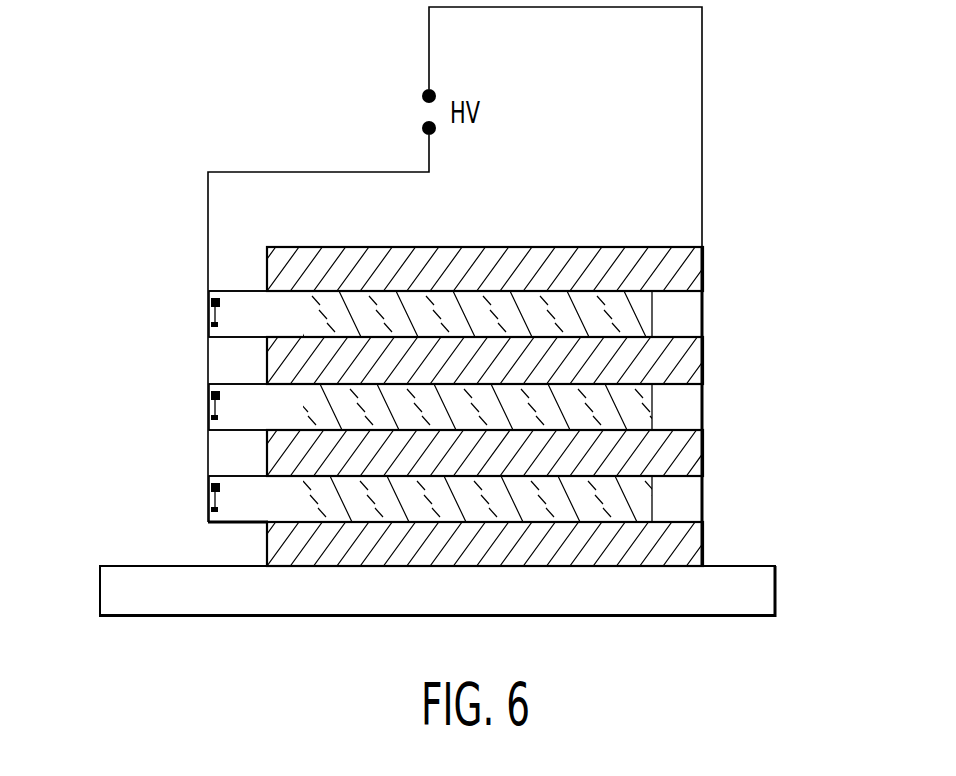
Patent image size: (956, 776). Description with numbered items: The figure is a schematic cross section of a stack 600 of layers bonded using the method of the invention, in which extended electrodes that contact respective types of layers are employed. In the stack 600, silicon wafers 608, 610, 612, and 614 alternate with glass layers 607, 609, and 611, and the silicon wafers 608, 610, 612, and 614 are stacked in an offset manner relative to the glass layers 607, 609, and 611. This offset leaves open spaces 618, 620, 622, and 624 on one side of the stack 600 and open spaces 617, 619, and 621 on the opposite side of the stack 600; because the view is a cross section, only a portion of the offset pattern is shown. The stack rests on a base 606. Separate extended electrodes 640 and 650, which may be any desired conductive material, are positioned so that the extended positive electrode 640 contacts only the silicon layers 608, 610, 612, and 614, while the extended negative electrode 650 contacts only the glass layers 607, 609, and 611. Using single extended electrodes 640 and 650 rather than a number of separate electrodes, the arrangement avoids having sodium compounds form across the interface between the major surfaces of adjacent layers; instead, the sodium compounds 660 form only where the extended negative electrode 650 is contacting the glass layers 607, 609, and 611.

The stack 600 is at (555, 167).
The base substrate 606 is at (775, 590).
The glass layer 607 is at (704, 293).
The silicon wafer 608 is at (266, 272).
The glass layer 609 is at (704, 384).
The silicon wafer 610 is at (252, 366).
The glass layer 611 is at (704, 476).
The silicon wafer 612 is at (252, 459).
The silicon wafer 614 is at (267, 547).
The open space 617 is at (704, 325).
The open space 618 is at (230, 284).
The open space 619 is at (704, 418).
The open space 620 is at (230, 376).
The open space 621 is at (704, 510).
The open space 622 is at (230, 468).
The open space 624 is at (225, 555).
The extended positive electrode 640 is at (702, 108).
The extended negative electrode 650 is at (207, 172).
The sodium compounds 660 is at (223, 305).